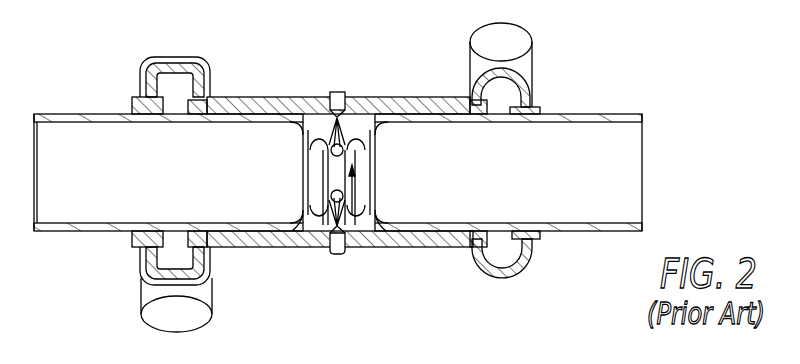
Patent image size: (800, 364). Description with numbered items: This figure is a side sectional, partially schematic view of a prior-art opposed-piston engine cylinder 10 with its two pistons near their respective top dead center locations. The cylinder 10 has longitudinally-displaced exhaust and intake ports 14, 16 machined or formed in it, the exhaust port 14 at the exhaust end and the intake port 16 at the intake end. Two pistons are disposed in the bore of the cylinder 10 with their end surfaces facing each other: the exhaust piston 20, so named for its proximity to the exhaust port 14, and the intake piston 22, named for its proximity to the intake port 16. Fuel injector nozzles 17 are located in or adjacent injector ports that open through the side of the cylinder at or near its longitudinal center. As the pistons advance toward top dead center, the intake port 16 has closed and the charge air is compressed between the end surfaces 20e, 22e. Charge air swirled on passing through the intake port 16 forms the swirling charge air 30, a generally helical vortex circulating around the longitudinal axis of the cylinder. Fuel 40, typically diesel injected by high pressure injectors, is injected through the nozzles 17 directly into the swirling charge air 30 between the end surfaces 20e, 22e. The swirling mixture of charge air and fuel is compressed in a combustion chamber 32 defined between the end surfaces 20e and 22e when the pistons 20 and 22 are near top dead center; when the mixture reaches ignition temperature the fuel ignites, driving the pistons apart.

The cylinder 10 is at (287, 247).
The exhaust port 14 is at (177, 232).
The intake port 16 is at (500, 233).
The fuel injector nozzles 17 is at (338, 92).
The exhaust piston 20 is at (87, 114).
The end surface of exhaust piston 20e is at (303, 112).
The intake piston 22 is at (613, 114).
The end surface of intake piston 22e is at (371, 240).
The swirling charge air 30 is at (340, 147).
The combustion chamber 32 is at (315, 222).
The fuel 40 is at (350, 143).